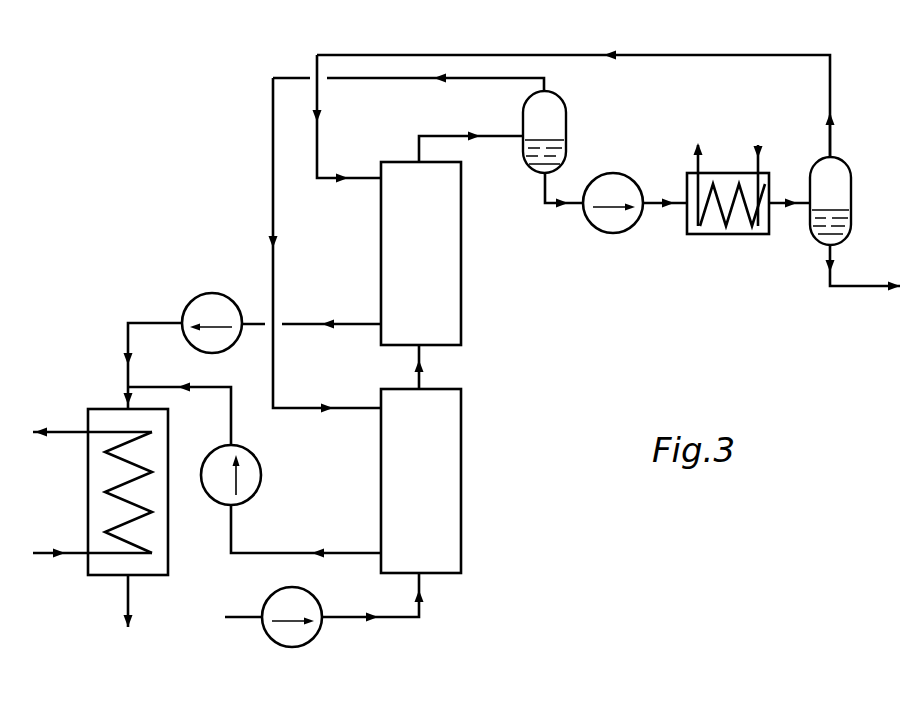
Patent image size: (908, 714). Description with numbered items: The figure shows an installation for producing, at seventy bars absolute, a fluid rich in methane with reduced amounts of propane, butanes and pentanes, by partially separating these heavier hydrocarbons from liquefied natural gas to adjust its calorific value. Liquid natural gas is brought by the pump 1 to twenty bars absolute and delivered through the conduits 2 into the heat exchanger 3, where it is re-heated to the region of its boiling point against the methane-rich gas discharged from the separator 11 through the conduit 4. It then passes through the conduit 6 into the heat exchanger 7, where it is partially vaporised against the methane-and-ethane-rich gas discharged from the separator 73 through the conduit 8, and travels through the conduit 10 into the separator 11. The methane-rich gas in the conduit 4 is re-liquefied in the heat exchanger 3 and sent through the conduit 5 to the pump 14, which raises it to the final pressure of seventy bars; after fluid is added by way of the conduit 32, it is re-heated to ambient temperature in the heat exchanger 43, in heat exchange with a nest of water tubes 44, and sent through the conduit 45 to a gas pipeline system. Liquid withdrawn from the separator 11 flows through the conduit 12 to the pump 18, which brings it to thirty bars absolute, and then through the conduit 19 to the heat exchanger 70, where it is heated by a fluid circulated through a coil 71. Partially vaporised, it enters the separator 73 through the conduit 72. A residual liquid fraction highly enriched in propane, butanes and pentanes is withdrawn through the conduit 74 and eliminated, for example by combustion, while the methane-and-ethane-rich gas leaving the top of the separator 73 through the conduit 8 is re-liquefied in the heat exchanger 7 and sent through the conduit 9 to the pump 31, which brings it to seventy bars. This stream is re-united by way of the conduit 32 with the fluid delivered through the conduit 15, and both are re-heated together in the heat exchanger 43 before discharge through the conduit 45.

The pump 1 is at (268, 597).
The conduit 2 is at (394, 618).
The heat exchanger 3 is at (462, 490).
The conduit 4 is at (275, 266).
The conduit 5 is at (334, 552).
The conduit 6 is at (422, 378).
The heat exchanger 7 is at (462, 249).
The conduit 8 is at (319, 150).
The conduit 9 is at (345, 323).
The conduit 10 is at (439, 135).
The separator 11 is at (567, 126).
The conduit 12 is at (552, 209).
The pump 14 is at (262, 486).
The conduit 15 is at (212, 390).
The pump 18 is at (606, 234).
The conduit 19 is at (673, 208).
The pump 31 is at (228, 295).
The conduit 32 is at (141, 321).
The heat exchanger 43 is at (170, 542).
The nest of water tubes 44 is at (115, 485).
The conduit 45 is at (131, 602).
The heat exchanger 70 is at (730, 236).
The coil 71 is at (718, 192).
The conduit 72 is at (796, 208).
The separator 73 is at (812, 172).
The conduit 74 is at (846, 289).